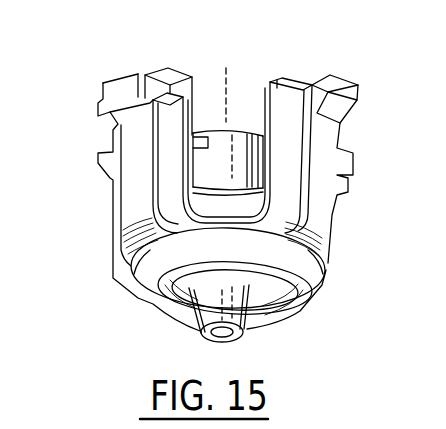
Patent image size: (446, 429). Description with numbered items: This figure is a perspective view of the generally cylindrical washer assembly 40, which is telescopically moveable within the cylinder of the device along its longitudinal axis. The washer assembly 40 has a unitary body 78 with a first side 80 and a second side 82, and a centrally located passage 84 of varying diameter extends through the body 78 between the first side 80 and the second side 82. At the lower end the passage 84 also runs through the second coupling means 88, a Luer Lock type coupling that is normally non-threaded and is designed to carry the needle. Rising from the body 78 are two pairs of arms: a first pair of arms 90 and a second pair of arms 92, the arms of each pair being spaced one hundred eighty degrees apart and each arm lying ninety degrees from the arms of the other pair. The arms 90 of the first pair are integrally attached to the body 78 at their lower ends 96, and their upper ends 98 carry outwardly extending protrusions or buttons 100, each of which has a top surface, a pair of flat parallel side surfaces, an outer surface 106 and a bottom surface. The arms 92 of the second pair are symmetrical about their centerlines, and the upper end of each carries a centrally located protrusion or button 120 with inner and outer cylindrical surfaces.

The washer assembly 40 is at (100, 213).
The unitary body 78 is at (152, 280).
The first side 80 is at (233, 130).
The second side 82 is at (200, 335).
The centrally located passage 84 is at (223, 336).
The second coupling means 88 is at (241, 327).
The first pair of arms 90 is at (325, 137).
The second pair of arms 92 is at (132, 140).
The lower ends 96 is at (322, 224).
The upper ends 98 is at (290, 78).
The protrusion or button 100 is at (330, 70).
The outer surface 106 is at (345, 88).
The protrusion or button 120 is at (125, 86).